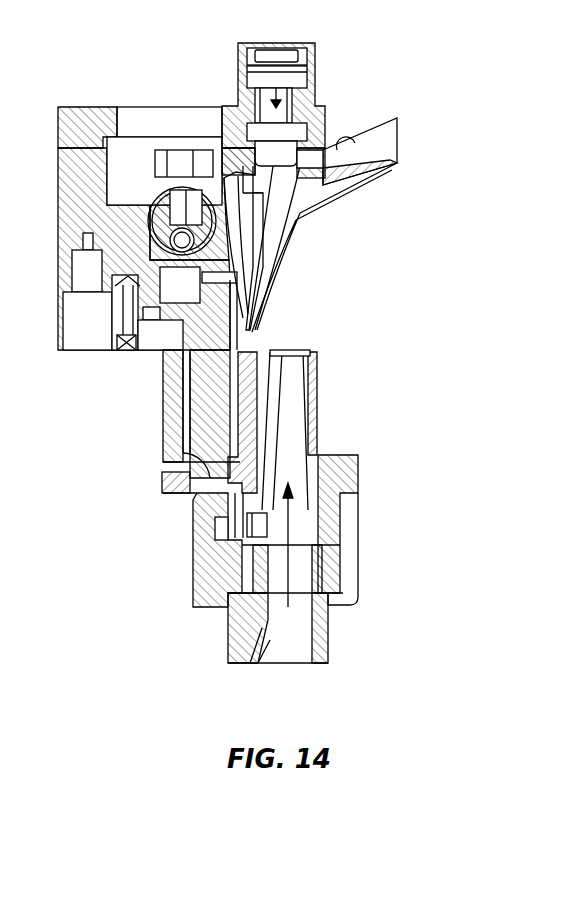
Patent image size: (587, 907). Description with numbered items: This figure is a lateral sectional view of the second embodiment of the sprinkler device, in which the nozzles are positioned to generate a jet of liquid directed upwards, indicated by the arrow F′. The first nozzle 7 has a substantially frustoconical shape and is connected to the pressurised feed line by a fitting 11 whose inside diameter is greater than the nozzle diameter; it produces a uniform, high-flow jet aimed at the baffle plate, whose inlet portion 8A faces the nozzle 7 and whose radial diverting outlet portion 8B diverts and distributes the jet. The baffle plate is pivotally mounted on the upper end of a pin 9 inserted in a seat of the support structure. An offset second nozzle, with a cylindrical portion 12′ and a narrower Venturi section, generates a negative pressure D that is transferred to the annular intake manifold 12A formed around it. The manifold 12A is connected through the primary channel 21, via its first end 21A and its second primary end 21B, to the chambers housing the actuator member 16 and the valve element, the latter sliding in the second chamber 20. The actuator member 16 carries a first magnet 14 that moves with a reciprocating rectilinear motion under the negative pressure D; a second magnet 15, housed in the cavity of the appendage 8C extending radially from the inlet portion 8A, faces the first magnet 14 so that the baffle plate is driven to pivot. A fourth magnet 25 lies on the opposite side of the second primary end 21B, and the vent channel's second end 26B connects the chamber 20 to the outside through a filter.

The first nozzle 7 is at (318, 407).
The inlet portion 8A is at (258, 283).
The diverting outlet portion 8B is at (382, 157).
The appendage 8C is at (197, 150).
The pin 9 is at (280, 172).
The fitting 11 is at (243, 638).
The portion of the second nozzle 12′ is at (260, 534).
The annular intake manifold 12A is at (318, 473).
The first magnet 14 is at (182, 213).
The second magnet 15 is at (158, 162).
The actuator member 16 is at (147, 220).
The second chamber 20 is at (197, 299).
The primary channel 21 is at (185, 408).
The first end 21A is at (205, 456).
The second primary end 21B is at (125, 349).
The fourth magnet 25 is at (243, 332).
The second end of the vent channel 26B is at (90, 228).
The negative pressure D is at (180, 378).
The arrow indicating the jet of liquid F′ is at (290, 608).